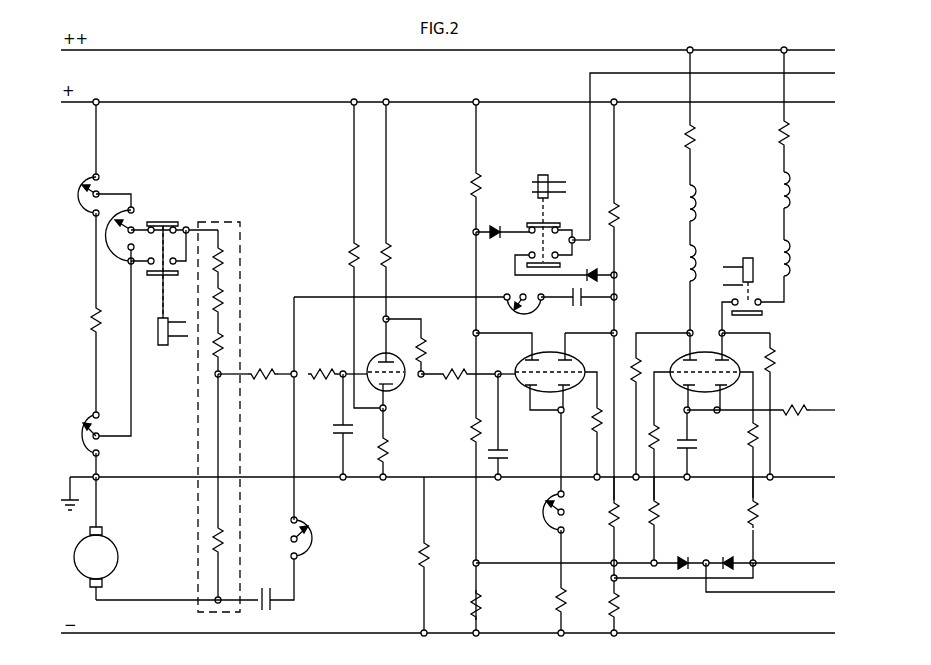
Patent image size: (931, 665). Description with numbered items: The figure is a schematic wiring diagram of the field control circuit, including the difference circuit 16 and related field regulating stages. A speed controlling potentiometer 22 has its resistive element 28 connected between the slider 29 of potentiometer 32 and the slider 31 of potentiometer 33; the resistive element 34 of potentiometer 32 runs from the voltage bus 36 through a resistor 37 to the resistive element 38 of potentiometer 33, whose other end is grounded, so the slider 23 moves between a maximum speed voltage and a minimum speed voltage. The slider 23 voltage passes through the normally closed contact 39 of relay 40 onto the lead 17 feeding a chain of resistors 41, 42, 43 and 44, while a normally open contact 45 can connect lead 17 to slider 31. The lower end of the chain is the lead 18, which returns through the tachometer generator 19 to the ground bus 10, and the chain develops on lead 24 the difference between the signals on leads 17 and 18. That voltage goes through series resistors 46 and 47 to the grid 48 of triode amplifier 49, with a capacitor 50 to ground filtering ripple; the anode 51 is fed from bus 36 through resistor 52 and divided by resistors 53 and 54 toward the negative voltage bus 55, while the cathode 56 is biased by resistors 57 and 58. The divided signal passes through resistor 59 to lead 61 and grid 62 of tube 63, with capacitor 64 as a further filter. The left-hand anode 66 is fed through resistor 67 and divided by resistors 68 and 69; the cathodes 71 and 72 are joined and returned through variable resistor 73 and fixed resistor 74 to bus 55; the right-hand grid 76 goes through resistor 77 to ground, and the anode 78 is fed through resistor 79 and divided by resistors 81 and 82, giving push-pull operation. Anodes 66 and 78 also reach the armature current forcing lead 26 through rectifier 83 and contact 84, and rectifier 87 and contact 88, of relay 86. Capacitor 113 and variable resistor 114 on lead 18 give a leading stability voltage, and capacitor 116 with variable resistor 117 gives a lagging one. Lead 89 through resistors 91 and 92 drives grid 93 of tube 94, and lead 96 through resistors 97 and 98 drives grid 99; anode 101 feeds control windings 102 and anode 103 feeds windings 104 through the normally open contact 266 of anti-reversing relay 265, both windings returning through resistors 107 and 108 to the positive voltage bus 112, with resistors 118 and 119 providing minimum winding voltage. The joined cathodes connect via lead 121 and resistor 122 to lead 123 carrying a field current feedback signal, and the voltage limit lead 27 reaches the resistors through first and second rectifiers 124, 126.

The positive voltage bus 112 is at (322, 50).
The voltage bus 36 is at (293, 102).
The armature current forcing lead 26 is at (823, 73).
The negative voltage bus 55 is at (349, 634).
The ground bus 10 is at (445, 477).
The slider 29 is at (107, 142).
The potentiometer 32 is at (75, 203).
The resistive element 34 is at (85, 212).
The resistor 37 is at (89, 311).
The slider 23 is at (142, 211).
The resistive element 28 is at (110, 226).
The potentiometer 22 is at (122, 248).
The normally closed contact 39 is at (175, 216).
The normally open contact 45 is at (163, 257).
The relay 40 is at (160, 334).
The lead 17 is at (188, 222).
The resistor 41 is at (230, 259).
The resistor 42 is at (230, 303).
The resistor 43 is at (230, 349).
The lead 24 is at (224, 380).
The series resistor 46 is at (266, 380).
The difference circuit 16 is at (239, 438).
The resistor 44 is at (226, 548).
The potentiometer 33 is at (78, 430).
The slider 31 is at (98, 422).
The resistive element 38 is at (86, 446).
The tachometer generator 19 is at (118, 557).
The lead 18 is at (153, 600).
The capacitor 113 is at (271, 608).
The variable resistor 114 is at (308, 540).
The series resistor 47 is at (322, 366).
The capacitor 50 is at (332, 432).
The resistor 58 is at (346, 257).
The resistor 52 is at (396, 257).
The triode amplifier 49 is at (374, 355).
The anode 51 is at (389, 359).
The grid 48 is at (392, 388).
The cathode 56 is at (386, 410).
The resistor 57 is at (389, 456).
The resistor 53 is at (427, 343).
The resistor 59 is at (446, 380).
The lead 61 is at (479, 362).
The resistor 67 is at (469, 186).
The rectifier 83 is at (496, 226).
The resistor 68 is at (470, 428).
The capacitor 64 is at (505, 450).
The relay 86 is at (540, 172).
The contact 84 is at (553, 226).
The contact 88 is at (530, 256).
The rectifier 87 is at (590, 268).
The resistor 79 is at (622, 214).
The variable resistor 117 is at (542, 304).
The capacitor 116 is at (579, 304).
The resistor 118 is at (630, 306).
The tube 63 is at (550, 360).
The grid 62 is at (514, 370).
The anode 66 is at (528, 352).
The anode 78 is at (570, 352).
The grid 76 is at (584, 370).
The cathode 71 is at (534, 397).
The cathode 72 is at (570, 387).
The resistor 77 is at (596, 430).
The resistor 107 is at (684, 138).
The D.C. control windings 102 is at (696, 196).
The resistor 108 is at (778, 132).
The D.C. control windings 104 is at (778, 192).
The relay 265 is at (758, 250).
The normally open contact 266 is at (762, 318).
The anode 101 is at (684, 355).
The tube 94 is at (699, 346).
The anode 103 is at (742, 346).
The resistor 119 is at (777, 355).
The grid 93 is at (638, 362).
The resistor 92 is at (662, 435).
The grid 99 is at (721, 390).
The lead 121 is at (710, 423).
The resistor 98 is at (750, 450).
The resistor 122 is at (795, 406).
The lead 123 is at (829, 412).
The resistor 54 is at (418, 556).
The resistor 69 is at (470, 607).
The lead 89 is at (600, 563).
The variable resistor 73 is at (546, 524).
The fixed resistor 74 is at (556, 607).
The resistor 81 is at (608, 520).
The resistor 82 is at (624, 607).
The resistor 91 is at (659, 511).
The resistor 97 is at (759, 514).
The first rectifier 124 is at (685, 557).
The second rectifier 126 is at (726, 557).
The lead 96 is at (684, 578).
The lead 27 is at (798, 592).